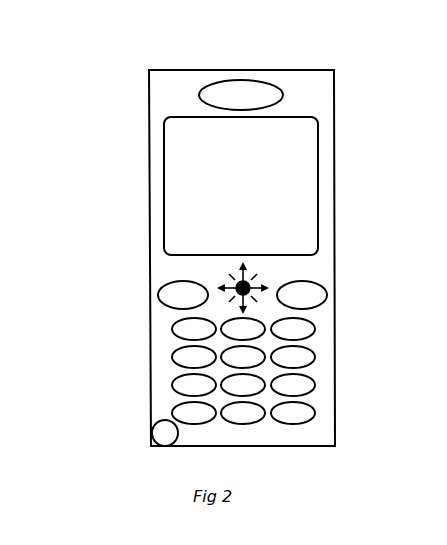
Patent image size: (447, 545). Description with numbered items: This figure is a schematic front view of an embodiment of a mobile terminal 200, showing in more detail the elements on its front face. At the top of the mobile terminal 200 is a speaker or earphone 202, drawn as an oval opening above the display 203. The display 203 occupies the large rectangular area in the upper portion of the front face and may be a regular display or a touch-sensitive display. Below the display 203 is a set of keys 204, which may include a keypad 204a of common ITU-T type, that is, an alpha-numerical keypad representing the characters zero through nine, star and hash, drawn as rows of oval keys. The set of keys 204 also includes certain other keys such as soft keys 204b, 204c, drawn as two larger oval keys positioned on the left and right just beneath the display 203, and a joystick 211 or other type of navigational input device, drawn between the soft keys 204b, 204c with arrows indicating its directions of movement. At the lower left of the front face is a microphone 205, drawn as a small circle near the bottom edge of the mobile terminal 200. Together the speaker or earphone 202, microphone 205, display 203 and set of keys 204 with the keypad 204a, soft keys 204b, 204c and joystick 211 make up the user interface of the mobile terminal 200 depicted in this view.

The mobile terminal 200 is at (116, 76).
The speaker or earphone 202 is at (231, 88).
The display 203 is at (176, 172).
The set of keys 204 is at (158, 324).
The keypad 204a is at (305, 355).
The soft key 204b is at (178, 297).
The soft key 204c is at (307, 298).
The microphone 205 is at (163, 432).
The joystick 211 is at (238, 284).